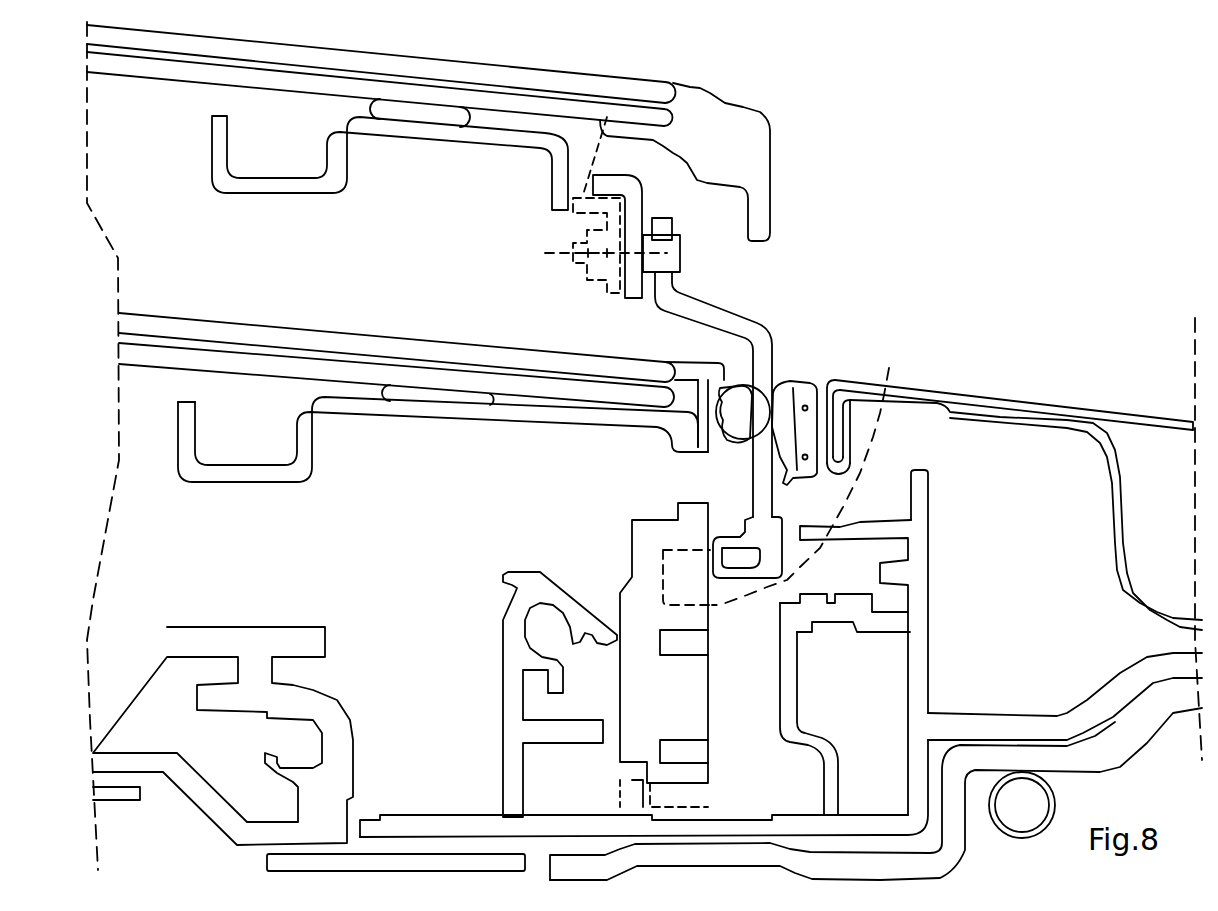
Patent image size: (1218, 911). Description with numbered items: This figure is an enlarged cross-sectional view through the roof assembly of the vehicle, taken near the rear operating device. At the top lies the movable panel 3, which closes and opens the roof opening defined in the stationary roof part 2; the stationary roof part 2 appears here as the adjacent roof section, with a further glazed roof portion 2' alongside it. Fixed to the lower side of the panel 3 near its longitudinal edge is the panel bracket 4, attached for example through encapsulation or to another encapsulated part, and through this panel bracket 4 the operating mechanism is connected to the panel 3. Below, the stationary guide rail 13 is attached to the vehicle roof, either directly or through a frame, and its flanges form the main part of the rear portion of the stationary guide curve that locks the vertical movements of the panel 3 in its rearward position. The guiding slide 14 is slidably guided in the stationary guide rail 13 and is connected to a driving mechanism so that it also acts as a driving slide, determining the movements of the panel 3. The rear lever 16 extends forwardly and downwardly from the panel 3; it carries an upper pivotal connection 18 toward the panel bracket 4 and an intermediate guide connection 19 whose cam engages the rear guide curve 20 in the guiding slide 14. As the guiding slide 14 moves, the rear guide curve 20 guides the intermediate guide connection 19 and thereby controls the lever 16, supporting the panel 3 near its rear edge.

The roof part 2 is at (1018, 486).
The second glass pane 2' is at (397, 403).
The panel 3 is at (605, 88).
The panel bracket 4 is at (627, 75).
The stationary guide rail 13 is at (493, 680).
The guiding slide 14 is at (640, 697).
The lever 16 is at (740, 323).
The upper pivotal connection 18 is at (679, 244).
The intermediate guide connection 19 is at (807, 473).
The rear guide curve 20 is at (662, 580).